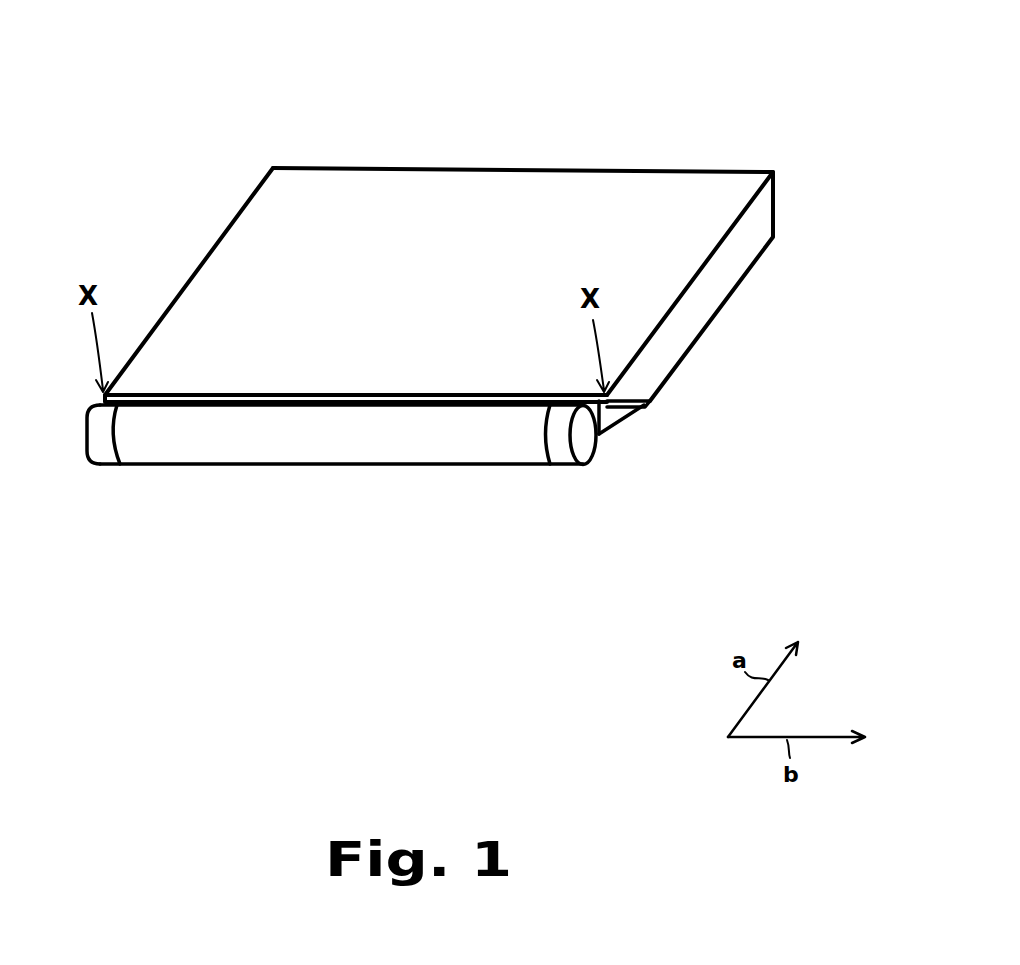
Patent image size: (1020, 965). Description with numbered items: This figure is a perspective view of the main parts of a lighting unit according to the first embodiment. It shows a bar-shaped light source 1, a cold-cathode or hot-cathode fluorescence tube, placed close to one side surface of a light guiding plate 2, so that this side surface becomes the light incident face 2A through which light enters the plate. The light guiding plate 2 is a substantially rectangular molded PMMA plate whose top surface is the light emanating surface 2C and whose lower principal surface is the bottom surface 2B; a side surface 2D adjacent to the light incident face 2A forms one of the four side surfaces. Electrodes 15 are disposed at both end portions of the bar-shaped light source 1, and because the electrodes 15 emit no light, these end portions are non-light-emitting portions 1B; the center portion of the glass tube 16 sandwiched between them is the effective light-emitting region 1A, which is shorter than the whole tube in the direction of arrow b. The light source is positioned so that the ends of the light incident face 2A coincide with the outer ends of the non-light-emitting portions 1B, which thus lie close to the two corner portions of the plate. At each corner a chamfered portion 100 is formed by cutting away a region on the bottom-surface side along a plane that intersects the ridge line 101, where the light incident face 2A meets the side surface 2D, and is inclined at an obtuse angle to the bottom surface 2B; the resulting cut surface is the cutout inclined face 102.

The bar-shaped light source 1 is at (314, 527).
The effective light-emitting region 1A is at (341, 527).
The non-light-emitting portions 1B is at (314, 527).
The electrodes 15 is at (565, 450).
The glass tube 16 is at (397, 448).
The light guiding plate 2 is at (488, 212).
The light incident face 2A is at (393, 393).
The bottom surface 2B is at (396, 168).
The light emanating surface 2C is at (315, 190).
The side surface 2D is at (195, 265).
The chamfered portion 100 is at (695, 514).
The ridge line 101 is at (645, 402).
The cutout inclined face 102 is at (630, 423).